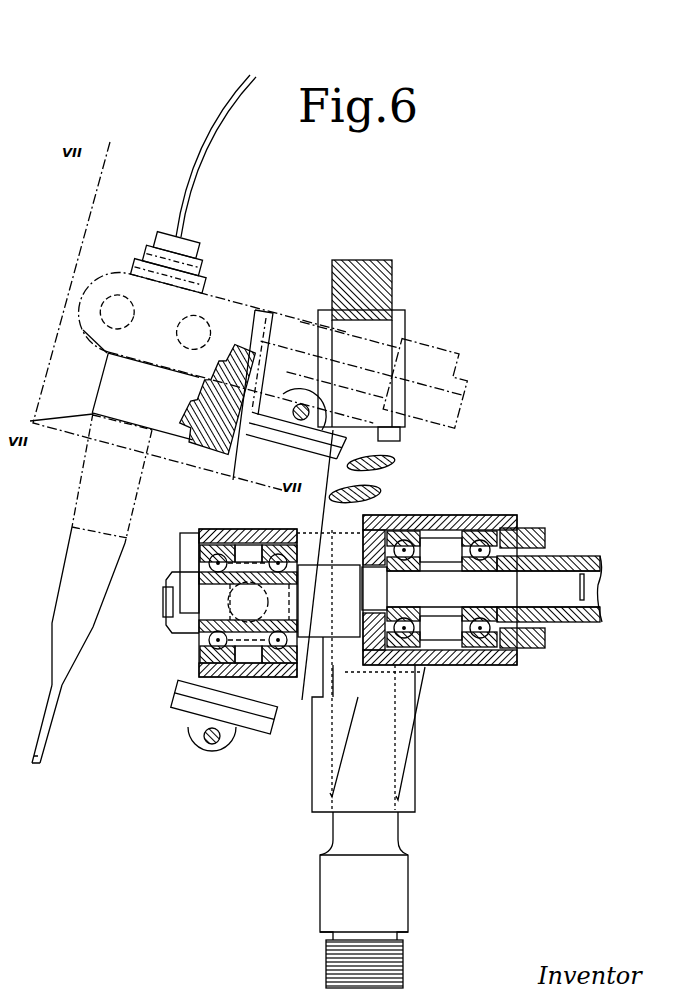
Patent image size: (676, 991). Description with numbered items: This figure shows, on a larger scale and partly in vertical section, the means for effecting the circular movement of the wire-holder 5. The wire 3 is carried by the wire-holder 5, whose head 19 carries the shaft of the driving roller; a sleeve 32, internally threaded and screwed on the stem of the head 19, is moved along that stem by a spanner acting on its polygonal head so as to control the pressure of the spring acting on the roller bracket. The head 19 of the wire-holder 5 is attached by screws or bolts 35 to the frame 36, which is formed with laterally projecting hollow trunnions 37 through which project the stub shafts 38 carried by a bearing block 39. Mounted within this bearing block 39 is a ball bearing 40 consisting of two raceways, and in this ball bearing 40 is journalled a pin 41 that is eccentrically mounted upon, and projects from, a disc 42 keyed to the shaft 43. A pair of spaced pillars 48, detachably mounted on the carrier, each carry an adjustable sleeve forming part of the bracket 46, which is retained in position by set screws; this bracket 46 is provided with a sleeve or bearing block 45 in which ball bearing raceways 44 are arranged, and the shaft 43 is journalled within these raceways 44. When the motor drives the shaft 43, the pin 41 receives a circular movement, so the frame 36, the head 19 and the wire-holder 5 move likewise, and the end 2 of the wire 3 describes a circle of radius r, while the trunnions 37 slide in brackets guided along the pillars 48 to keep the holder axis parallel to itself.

The end of the wire 2 is at (40, 763).
The wire 3 is at (226, 123).
The wire-holder 5 is at (92, 475).
The head of the wire-holder 19 is at (262, 320).
The sleeve 32 is at (447, 378).
The screws or bolts 35 is at (208, 428).
The frame 36 is at (243, 463).
The hollow trunnions 37 is at (210, 595).
The stub shafts 38 is at (201, 650).
The bearing block 39 is at (248, 530).
The ball bearing 40 is at (215, 543).
The pin 41 is at (218, 603).
The disc 42 is at (317, 630).
The shaft 43 is at (565, 597).
The ball bearing raceways 44 is at (410, 548).
The sleeve or bearing block 45 is at (472, 655).
The bracket 46 is at (400, 733).
The pillars 48 is at (385, 832).